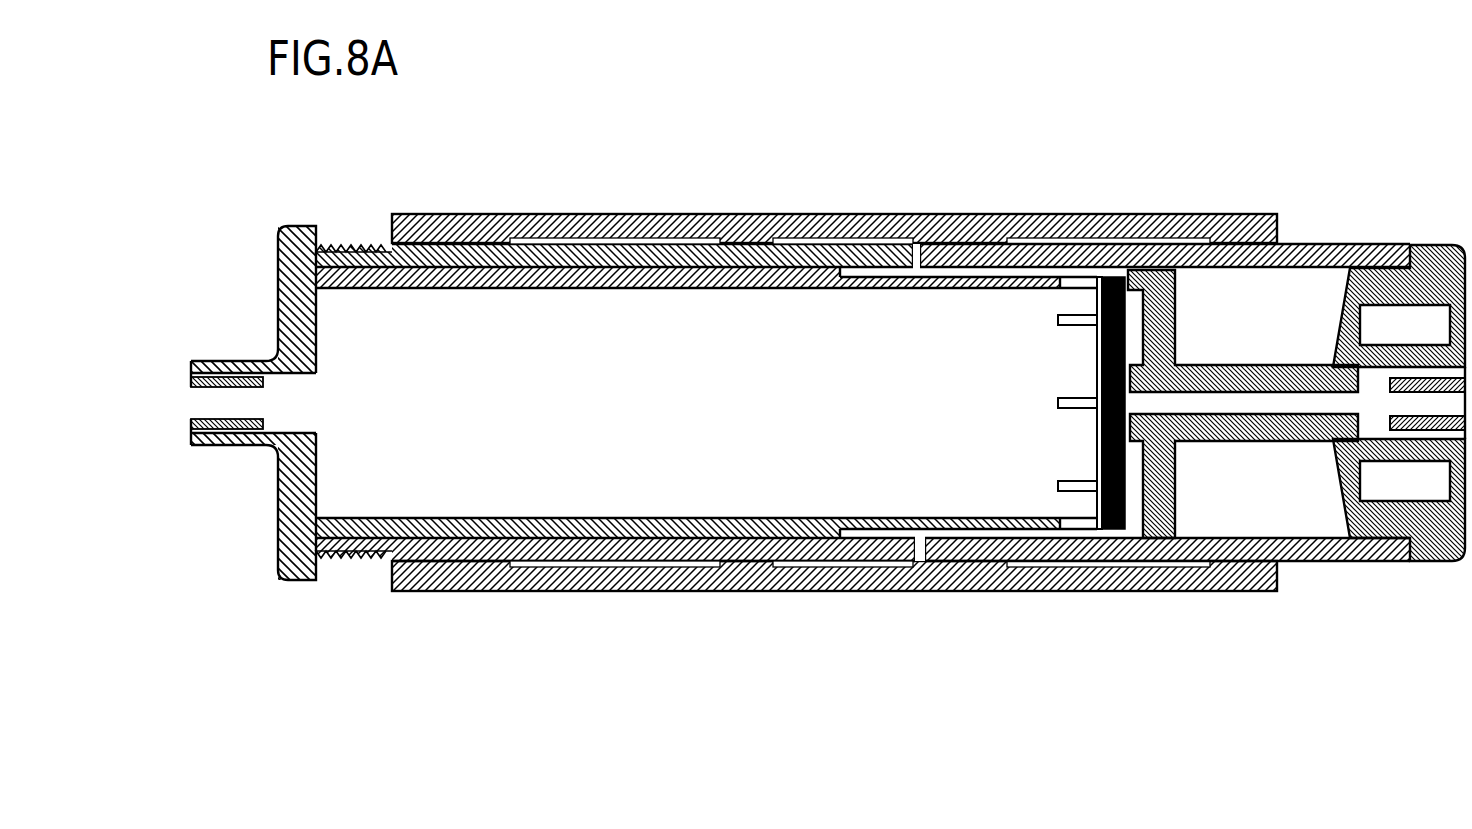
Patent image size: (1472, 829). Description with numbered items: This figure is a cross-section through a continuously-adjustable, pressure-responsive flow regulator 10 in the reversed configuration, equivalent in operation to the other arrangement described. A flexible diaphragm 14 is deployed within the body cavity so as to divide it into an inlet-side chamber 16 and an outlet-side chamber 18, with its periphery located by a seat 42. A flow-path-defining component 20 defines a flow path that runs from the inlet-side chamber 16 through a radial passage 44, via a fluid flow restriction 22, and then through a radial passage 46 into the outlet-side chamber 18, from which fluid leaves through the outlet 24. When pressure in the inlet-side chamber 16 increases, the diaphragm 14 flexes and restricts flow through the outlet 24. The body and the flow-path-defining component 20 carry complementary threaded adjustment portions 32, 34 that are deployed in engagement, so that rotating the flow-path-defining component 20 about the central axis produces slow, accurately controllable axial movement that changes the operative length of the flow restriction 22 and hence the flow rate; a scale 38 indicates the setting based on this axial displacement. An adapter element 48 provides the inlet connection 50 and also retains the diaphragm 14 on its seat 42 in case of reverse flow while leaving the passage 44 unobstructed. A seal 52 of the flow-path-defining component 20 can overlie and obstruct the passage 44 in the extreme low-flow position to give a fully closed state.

The flow regulator 10 is at (1168, 108).
The flexible diaphragm 14 is at (1090, 530).
The inlet-side chamber 16 is at (1095, 409).
The outlet-side chamber 18 is at (1113, 538).
The flow-path-defining component 20 is at (618, 214).
The fluid flow restriction 22 is at (955, 214).
The outlet 24 is at (1128, 400).
The threaded adjustment portion 32 is at (361, 245).
The threaded adjustment portion 34 is at (466, 214).
The scale 38 is at (1312, 245).
The seat 42 is at (1132, 271).
The radial passage 44 is at (928, 561).
The radial passage 46 is at (1132, 487).
The adapter element 48 is at (280, 581).
The inlet connection 50 is at (202, 447).
The seal 52 is at (757, 214).